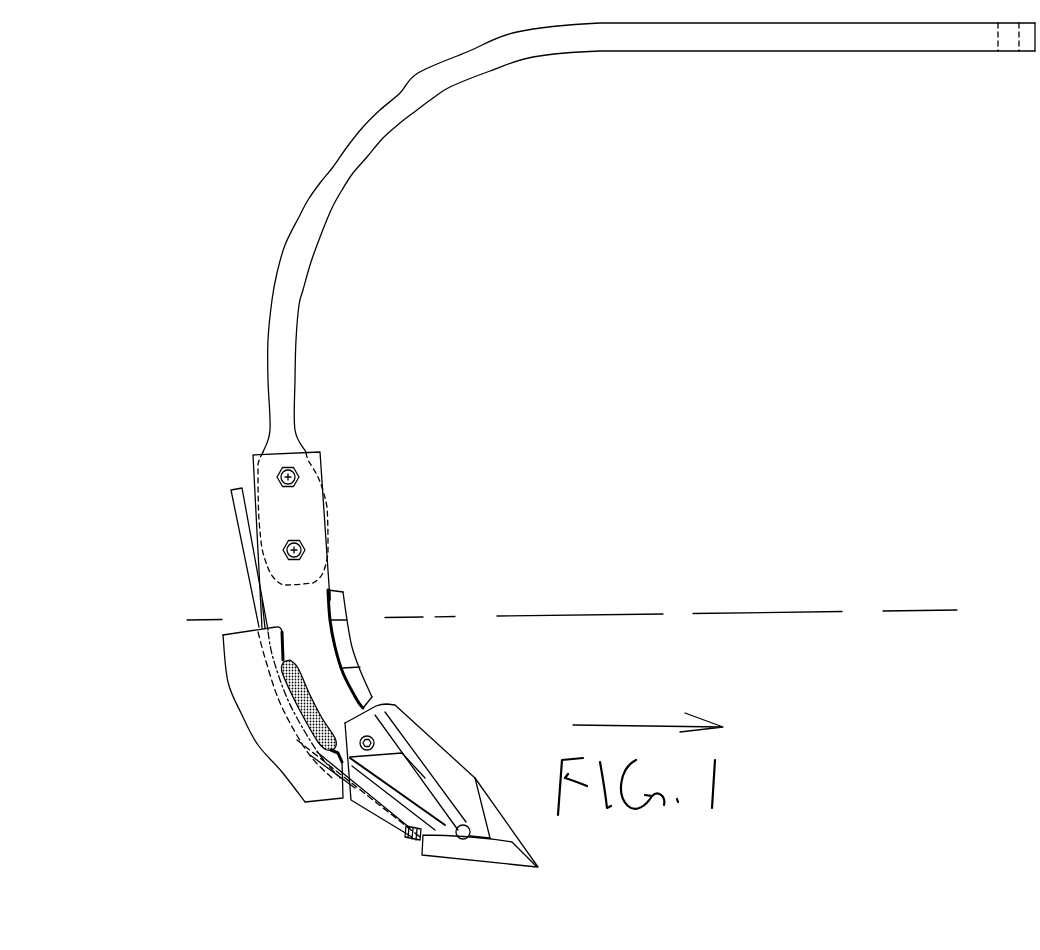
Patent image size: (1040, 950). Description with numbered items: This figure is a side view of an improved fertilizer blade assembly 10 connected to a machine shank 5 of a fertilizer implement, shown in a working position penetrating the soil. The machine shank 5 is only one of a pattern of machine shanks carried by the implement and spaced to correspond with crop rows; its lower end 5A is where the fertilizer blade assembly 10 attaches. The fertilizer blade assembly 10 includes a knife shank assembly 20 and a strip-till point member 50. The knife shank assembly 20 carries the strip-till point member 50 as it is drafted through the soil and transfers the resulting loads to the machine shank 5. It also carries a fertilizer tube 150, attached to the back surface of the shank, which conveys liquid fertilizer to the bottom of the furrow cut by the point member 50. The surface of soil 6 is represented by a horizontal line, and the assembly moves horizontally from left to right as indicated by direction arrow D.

The machine shank 5 is at (378, 227).
The shank lower end clamp plate 5A is at (327, 570).
The fertilizer blade assembly 10 is at (402, 566).
The knife shank assembly 20 is at (310, 650).
The strip-till point member 50 is at (456, 722).
The fertilizer tube 150 is at (247, 587).
The surface of soil 6 is at (645, 613).
The direction arrow D is at (653, 720).